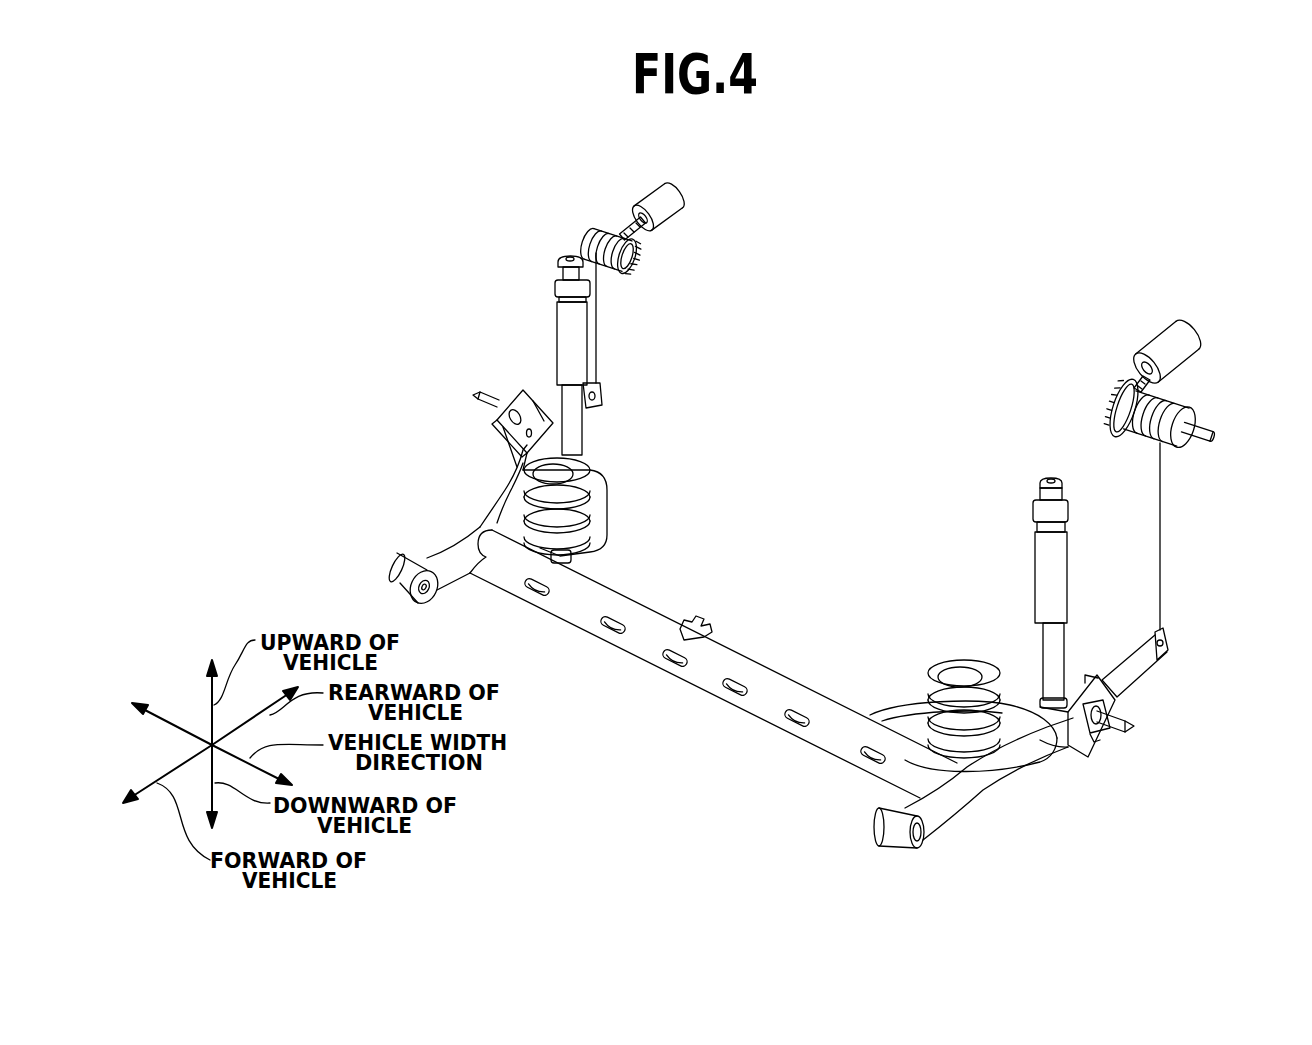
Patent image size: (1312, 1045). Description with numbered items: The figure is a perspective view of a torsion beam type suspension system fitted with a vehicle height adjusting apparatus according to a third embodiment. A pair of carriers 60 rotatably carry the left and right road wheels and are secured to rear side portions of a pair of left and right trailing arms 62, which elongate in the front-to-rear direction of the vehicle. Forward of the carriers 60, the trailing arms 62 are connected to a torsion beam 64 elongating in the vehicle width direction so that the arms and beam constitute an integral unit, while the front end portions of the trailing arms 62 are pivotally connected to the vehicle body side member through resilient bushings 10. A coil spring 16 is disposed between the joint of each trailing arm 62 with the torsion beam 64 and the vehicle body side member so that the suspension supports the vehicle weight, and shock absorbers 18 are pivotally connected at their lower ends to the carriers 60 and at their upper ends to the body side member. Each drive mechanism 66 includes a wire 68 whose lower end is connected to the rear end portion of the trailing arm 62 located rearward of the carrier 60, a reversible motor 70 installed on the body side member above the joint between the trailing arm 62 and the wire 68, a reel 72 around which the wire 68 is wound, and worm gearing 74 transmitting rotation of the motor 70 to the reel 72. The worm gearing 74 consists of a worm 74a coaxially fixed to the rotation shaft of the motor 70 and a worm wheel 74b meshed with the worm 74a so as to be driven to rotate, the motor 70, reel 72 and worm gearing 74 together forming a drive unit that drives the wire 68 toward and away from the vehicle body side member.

The resilient bushing 10 is at (435, 600).
The coil spring 16 is at (588, 478).
The shock absorber 18 is at (566, 337).
The carrier 60 is at (477, 393).
The trailing arm 62 is at (495, 516).
The torsion beam 64 is at (772, 660).
The drive mechanism 66 is at (933, 415).
The wire 68 is at (598, 331).
The reversible motor 70 is at (623, 293).
The reel 72 is at (607, 233).
The worm gearing 74 is at (885, 329).
The worm 74a is at (650, 228).
The worm wheel 74b is at (642, 273).